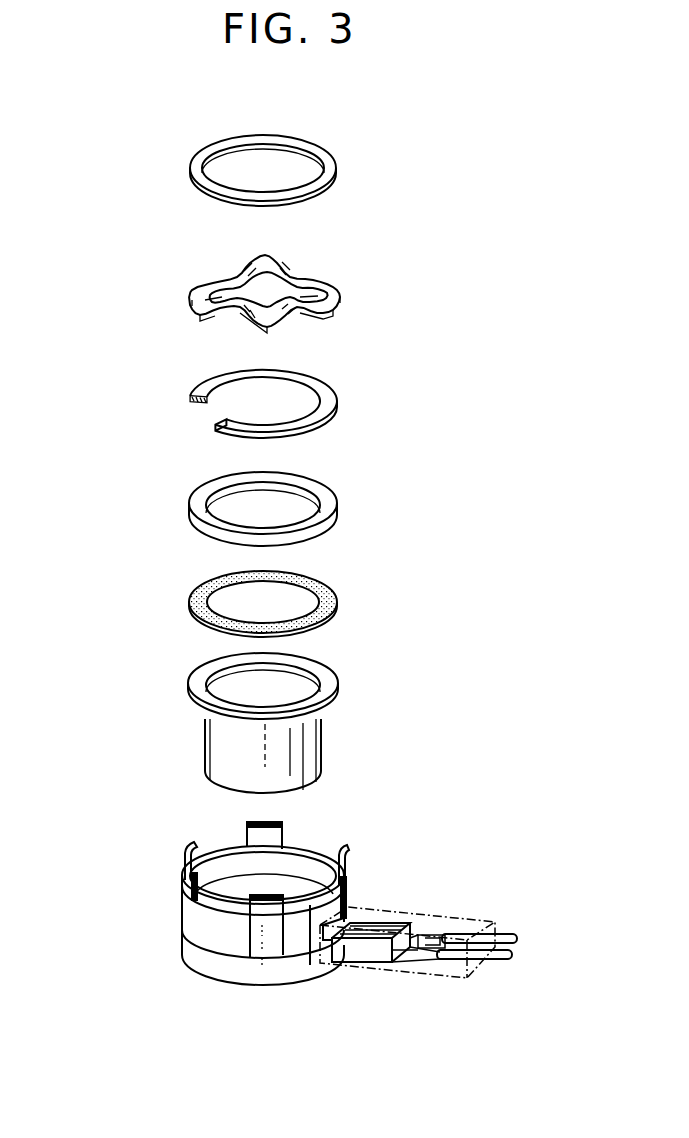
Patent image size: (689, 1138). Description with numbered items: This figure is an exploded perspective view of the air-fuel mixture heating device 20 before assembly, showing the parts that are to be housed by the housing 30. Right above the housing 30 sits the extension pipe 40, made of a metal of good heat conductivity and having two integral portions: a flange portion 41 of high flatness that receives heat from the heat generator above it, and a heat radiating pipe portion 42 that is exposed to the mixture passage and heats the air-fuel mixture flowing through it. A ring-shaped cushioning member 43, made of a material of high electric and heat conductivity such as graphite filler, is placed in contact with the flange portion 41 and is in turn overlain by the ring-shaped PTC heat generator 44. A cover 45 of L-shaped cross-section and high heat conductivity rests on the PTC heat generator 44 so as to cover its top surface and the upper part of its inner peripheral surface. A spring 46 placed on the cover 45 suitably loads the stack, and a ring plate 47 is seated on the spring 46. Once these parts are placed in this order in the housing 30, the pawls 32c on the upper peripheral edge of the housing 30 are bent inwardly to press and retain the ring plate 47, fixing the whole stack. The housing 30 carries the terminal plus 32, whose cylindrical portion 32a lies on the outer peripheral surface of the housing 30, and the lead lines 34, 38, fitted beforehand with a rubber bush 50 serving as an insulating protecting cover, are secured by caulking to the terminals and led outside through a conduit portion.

The air-fuel mixture heating device 20 is at (90, 970).
The housing 30 is at (266, 921).
The terminal plus 32 is at (266, 913).
The cylindrical portion 32a is at (233, 878).
The pawl portion 32c is at (277, 833).
The lead line 34 is at (505, 958).
The lead line 38 is at (508, 936).
The extension pipe 40 is at (269, 721).
The flange portion 41 is at (330, 683).
The heat radiating pipe portion 42 is at (303, 752).
The cushioning member 43 is at (332, 602).
The PTC heat generator 44 is at (336, 504).
The cover 45 is at (338, 402).
The spring 46 is at (340, 296).
The ring plate 47 is at (338, 167).
The rubber bush 50 is at (447, 922).